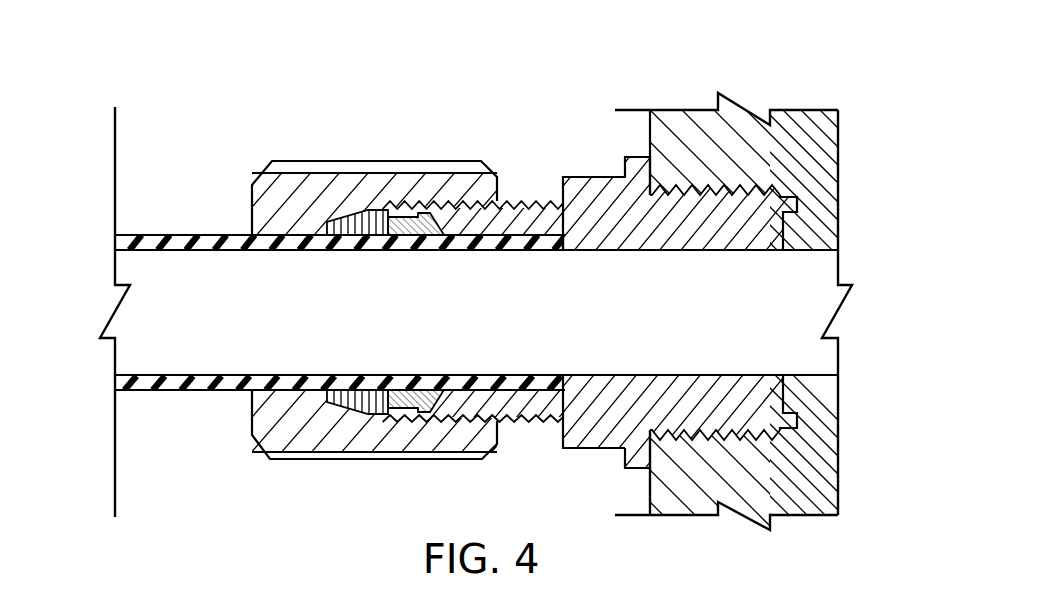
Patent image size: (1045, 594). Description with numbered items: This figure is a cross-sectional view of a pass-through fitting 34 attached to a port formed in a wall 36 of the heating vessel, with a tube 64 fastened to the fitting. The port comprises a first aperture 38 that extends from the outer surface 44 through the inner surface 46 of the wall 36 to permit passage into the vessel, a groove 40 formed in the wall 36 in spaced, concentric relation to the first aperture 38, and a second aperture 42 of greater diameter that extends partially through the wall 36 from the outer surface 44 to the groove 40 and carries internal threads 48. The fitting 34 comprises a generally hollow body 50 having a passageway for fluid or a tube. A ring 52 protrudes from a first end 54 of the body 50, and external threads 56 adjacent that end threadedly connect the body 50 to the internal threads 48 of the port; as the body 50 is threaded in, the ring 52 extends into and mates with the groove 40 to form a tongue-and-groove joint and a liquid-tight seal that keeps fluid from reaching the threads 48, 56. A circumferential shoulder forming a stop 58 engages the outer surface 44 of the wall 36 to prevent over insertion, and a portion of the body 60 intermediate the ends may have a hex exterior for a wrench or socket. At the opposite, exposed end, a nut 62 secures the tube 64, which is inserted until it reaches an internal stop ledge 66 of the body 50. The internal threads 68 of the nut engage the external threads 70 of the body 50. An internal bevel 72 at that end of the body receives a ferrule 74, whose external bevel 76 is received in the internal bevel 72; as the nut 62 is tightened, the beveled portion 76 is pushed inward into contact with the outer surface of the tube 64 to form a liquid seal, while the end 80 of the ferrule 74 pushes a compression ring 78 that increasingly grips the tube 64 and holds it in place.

The pass-through fitting 34 is at (468, 128).
The wall 36 is at (681, 124).
The first aperture 38 is at (826, 272).
The groove 40 is at (795, 295).
The second aperture 42 is at (753, 235).
The outer surface 44 is at (649, 137).
The inner surface 46 is at (841, 182).
The internal threads 48 is at (743, 180).
The body 50 is at (604, 237).
The ring 52 is at (795, 200).
The first end 54 is at (783, 251).
The external threads 56 is at (753, 235).
The stop 58 is at (637, 468).
The portion of the body 60 is at (586, 438).
The nut 62 is at (323, 180).
The tube 64 is at (183, 234).
The internal stop ledge 66 is at (566, 252).
The internal threads of the nut 68 is at (397, 210).
The external threads of the fitting body 70 is at (505, 204).
The internal bevel 72 is at (440, 240).
The ferrule 74 is at (400, 391).
The external bevel 76 is at (432, 391).
The compression ring 78 is at (352, 391).
The end of the ferrule 80 is at (402, 242).